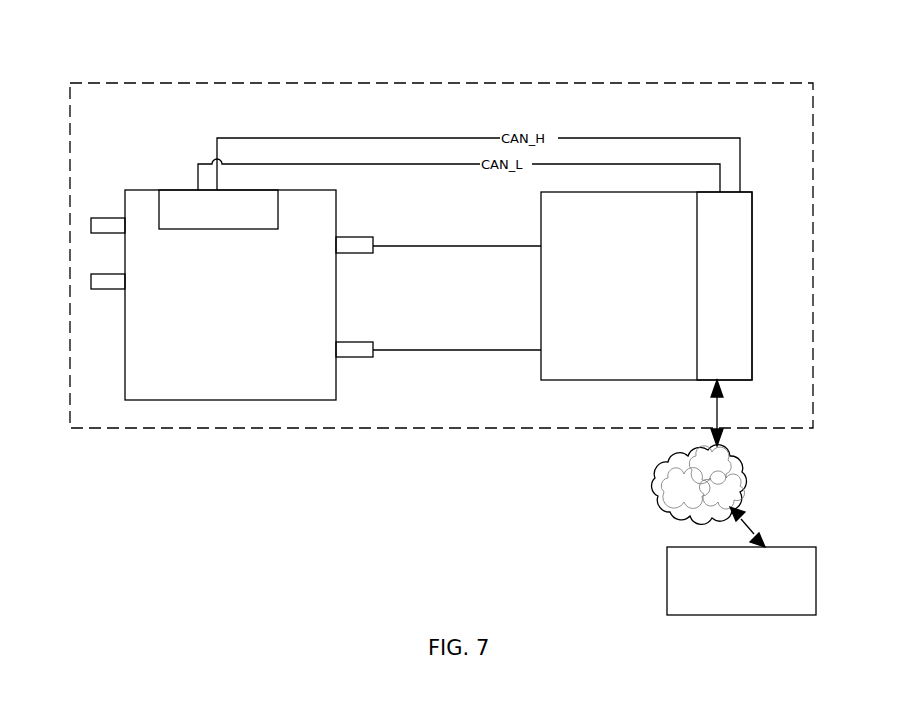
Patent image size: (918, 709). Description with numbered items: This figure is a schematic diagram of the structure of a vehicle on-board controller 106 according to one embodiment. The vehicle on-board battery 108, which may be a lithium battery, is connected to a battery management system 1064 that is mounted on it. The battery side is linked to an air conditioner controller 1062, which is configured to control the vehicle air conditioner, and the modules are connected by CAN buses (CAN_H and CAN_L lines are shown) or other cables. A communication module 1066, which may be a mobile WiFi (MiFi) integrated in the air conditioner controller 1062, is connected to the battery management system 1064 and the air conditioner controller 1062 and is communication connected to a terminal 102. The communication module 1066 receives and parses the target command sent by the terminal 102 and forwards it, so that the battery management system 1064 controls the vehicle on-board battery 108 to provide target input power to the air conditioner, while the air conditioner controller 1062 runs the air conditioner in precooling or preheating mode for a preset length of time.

The vehicle on-board controller 106 is at (476, 84).
The vehicle on-board battery 108 is at (224, 400).
The battery management system 1064 is at (279, 209).
The air conditioner controller 1062 is at (602, 381).
The communication module 1066 is at (741, 233).
The terminal 102 is at (790, 546).